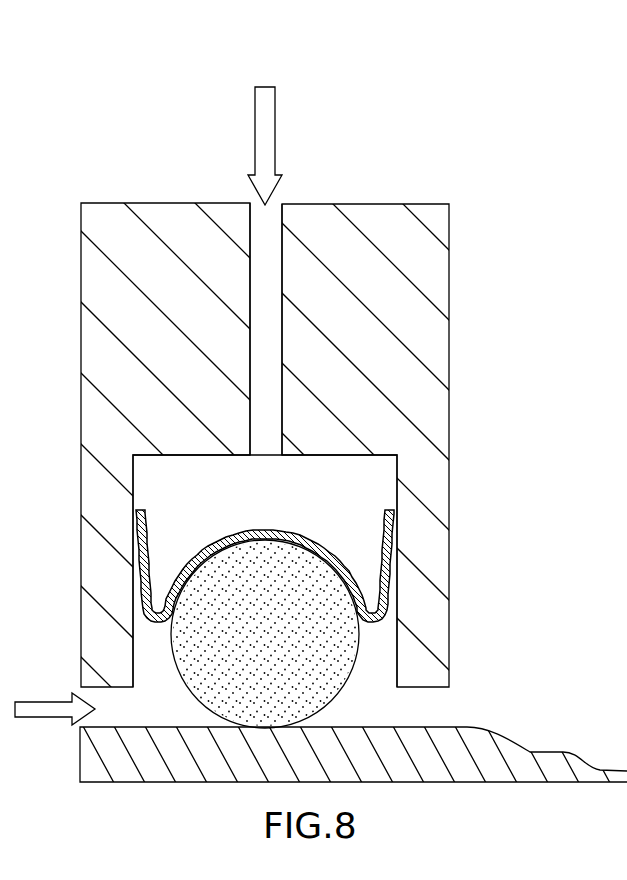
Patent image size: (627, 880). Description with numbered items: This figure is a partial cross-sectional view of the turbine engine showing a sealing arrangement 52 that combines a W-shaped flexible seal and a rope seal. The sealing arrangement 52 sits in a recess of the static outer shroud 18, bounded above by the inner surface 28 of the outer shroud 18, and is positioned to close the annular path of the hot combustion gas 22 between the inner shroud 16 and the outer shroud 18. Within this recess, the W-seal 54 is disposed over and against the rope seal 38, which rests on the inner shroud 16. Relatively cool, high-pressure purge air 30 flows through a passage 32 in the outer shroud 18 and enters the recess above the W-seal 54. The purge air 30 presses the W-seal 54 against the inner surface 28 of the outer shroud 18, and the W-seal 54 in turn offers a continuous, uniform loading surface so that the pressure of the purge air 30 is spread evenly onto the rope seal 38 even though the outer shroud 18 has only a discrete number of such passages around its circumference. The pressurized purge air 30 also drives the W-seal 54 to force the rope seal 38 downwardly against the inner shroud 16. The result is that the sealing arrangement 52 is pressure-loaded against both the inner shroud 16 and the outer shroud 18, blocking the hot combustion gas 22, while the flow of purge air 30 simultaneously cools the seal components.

The sealing arrangement 52 is at (510, 88).
The purge air 30 is at (275, 128).
The outer shroud 18 is at (438, 427).
The passage 32 is at (262, 426).
The inner surface 28 is at (137, 466).
The rope seal 38 is at (338, 700).
The W-seal 54 is at (263, 529).
The hot combustion gas 22 is at (62, 716).
The inner shroud 16 is at (165, 782).